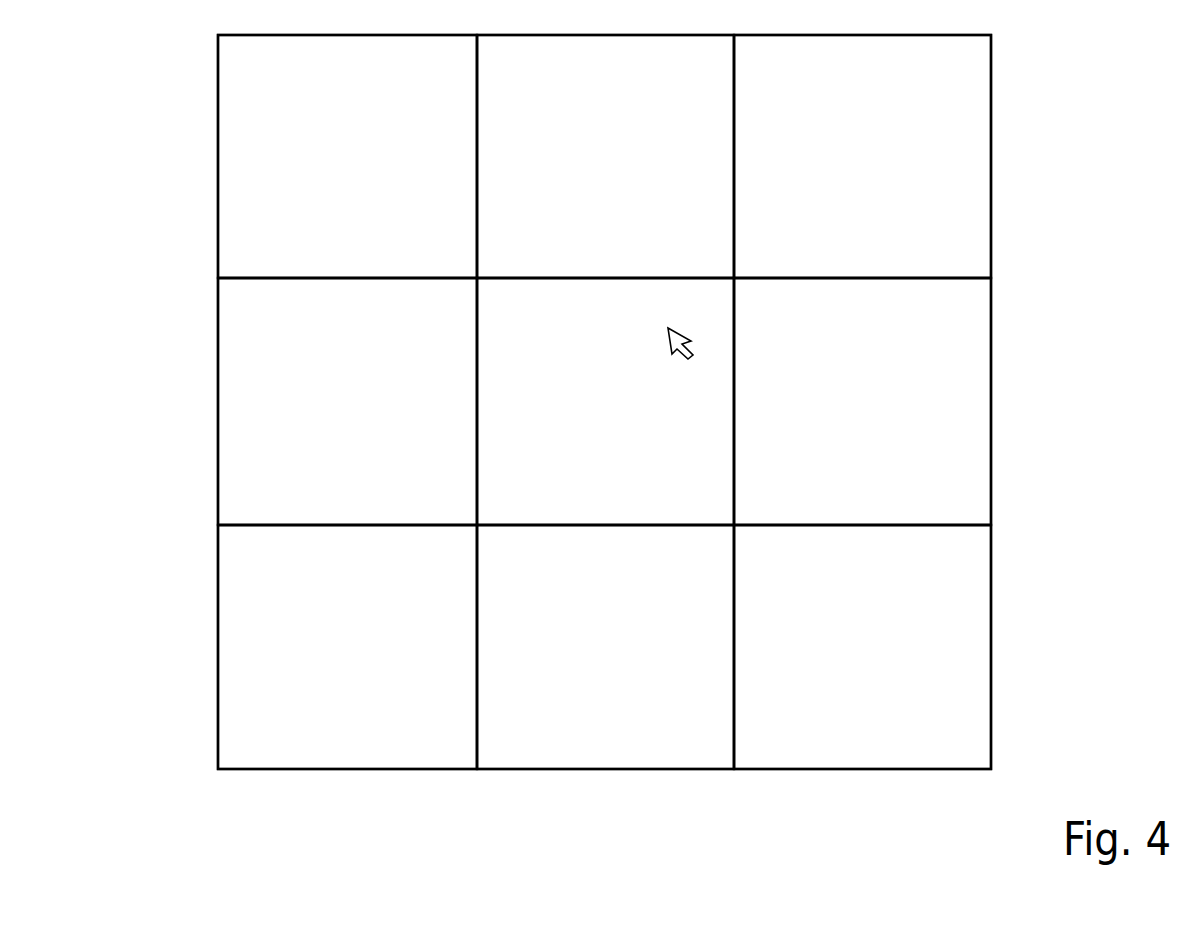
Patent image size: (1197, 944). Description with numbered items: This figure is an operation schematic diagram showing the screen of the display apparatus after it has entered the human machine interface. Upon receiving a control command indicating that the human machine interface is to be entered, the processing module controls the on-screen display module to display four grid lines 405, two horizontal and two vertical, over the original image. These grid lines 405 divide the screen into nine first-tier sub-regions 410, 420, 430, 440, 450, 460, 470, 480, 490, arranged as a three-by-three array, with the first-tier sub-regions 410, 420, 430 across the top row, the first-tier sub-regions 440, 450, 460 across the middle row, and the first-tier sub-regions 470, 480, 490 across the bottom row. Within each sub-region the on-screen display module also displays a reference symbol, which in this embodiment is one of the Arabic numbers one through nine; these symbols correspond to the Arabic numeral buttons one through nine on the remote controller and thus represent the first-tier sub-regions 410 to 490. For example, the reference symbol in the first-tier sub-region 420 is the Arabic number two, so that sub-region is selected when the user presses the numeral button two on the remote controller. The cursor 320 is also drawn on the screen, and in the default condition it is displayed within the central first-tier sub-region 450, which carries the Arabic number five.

The grid lines 405 is at (303, 280).
The first-tier sub-region 410 is at (278, 111).
The first-tier sub-region 420 is at (527, 248).
The first-tier sub-region 430 is at (932, 162).
The first-tier sub-region 440 is at (278, 482).
The first-tier sub-region 450 is at (542, 478).
The first-tier sub-region 460 is at (933, 323).
The first-tier sub-region 470 is at (278, 563).
The first-tier sub-region 480 is at (568, 742).
The first-tier sub-region 490 is at (933, 562).
The cursor 320 is at (686, 333).